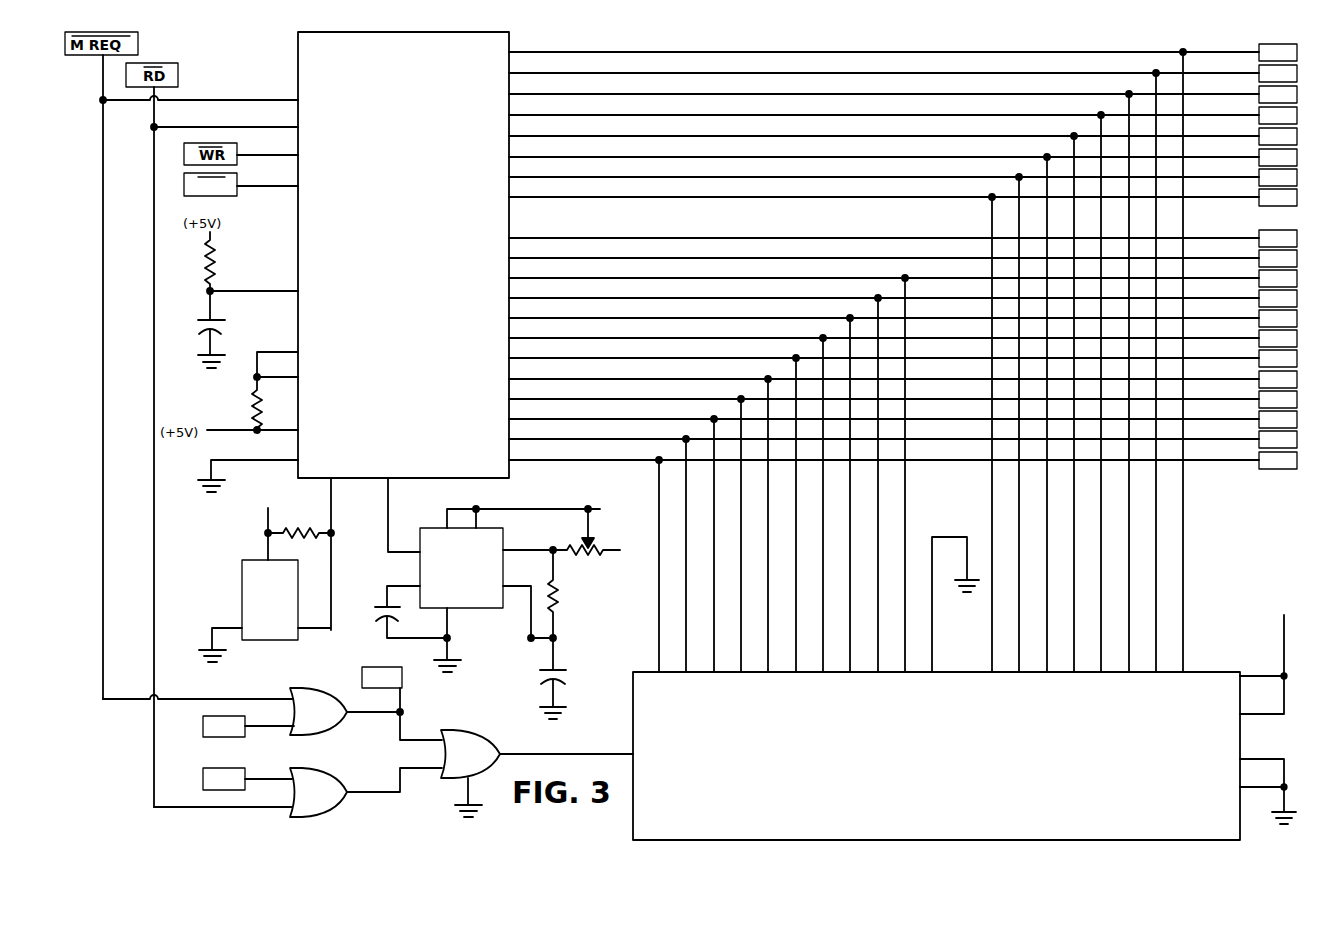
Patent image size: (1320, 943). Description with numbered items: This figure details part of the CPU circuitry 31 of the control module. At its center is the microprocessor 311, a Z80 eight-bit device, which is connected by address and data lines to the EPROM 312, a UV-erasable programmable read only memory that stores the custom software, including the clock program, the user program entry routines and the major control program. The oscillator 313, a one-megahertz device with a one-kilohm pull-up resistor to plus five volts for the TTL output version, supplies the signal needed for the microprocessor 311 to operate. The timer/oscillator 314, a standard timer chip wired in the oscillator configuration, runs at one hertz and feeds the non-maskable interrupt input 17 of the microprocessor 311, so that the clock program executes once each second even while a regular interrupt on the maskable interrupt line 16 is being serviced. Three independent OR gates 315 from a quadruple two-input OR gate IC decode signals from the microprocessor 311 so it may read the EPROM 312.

The microprocessor 311 is at (416, 80).
The EPROM 312 is at (918, 724).
The oscillator 313 is at (265, 578).
The timer/oscillator 314 is at (480, 580).
The OR gates 315 is at (460, 750).
The regular (maskable) interrupt line 16 is at (228, 190).
The non-maskable interrupt input 17 is at (388, 488).
The CPU circuitry 31 is at (977, 42).